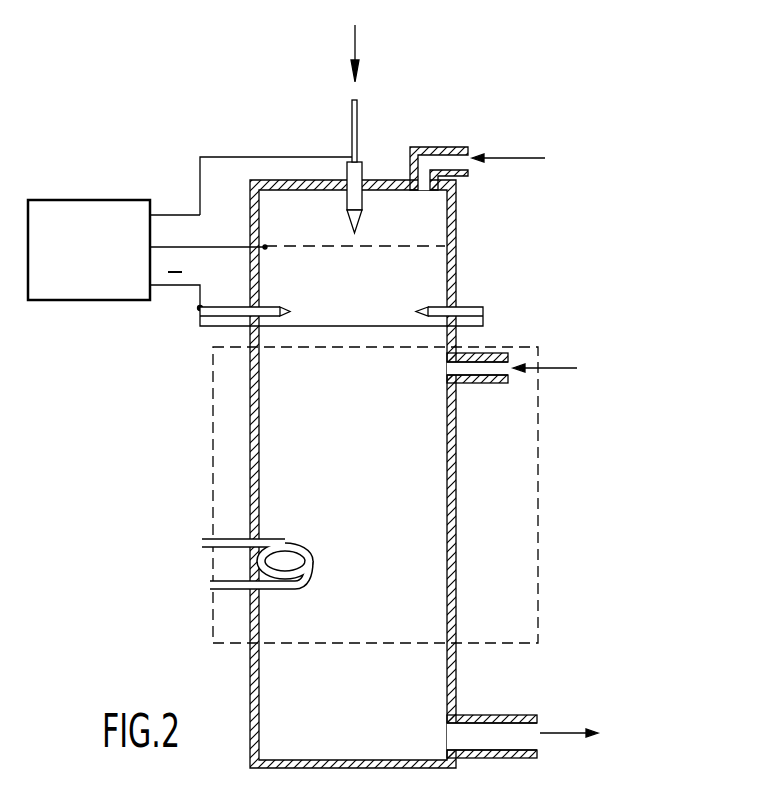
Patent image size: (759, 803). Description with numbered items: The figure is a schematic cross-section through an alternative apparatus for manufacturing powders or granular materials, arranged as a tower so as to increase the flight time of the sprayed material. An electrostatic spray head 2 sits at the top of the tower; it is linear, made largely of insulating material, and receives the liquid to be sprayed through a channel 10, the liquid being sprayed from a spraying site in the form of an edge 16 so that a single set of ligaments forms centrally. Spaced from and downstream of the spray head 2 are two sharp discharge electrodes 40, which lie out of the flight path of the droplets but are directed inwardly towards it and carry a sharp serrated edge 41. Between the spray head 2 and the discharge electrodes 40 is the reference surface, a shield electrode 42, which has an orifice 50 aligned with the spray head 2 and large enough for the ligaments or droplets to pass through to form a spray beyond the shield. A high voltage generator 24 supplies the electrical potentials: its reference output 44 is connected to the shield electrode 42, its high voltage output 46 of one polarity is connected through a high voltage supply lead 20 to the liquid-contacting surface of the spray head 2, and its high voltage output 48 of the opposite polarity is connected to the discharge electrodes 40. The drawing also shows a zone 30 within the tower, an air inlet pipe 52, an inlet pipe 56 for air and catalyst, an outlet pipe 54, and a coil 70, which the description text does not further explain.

The electrostatic spray head 2 is at (356, 188).
The channel 10 is at (370, 105).
The edge 16 is at (351, 233).
The high voltage supply lead 20 is at (275, 157).
The high voltage generator 24 is at (57, 290).
The reaction zone 30 is at (375, 495).
The discharge electrodes 40 is at (287, 300).
The sharp serrated edge 41 is at (416, 309).
The shield electrode 42 is at (422, 238).
The reference output 44 is at (193, 247).
The high voltage output 46 is at (163, 212).
The high voltage output 48 is at (163, 285).
The orifice 50 is at (353, 246).
The air inlet pipe 52 is at (447, 147).
The outlet pipe 54 is at (497, 715).
The air and catalyst inlet pipe 56 is at (485, 384).
The heating coil 70 is at (314, 545).